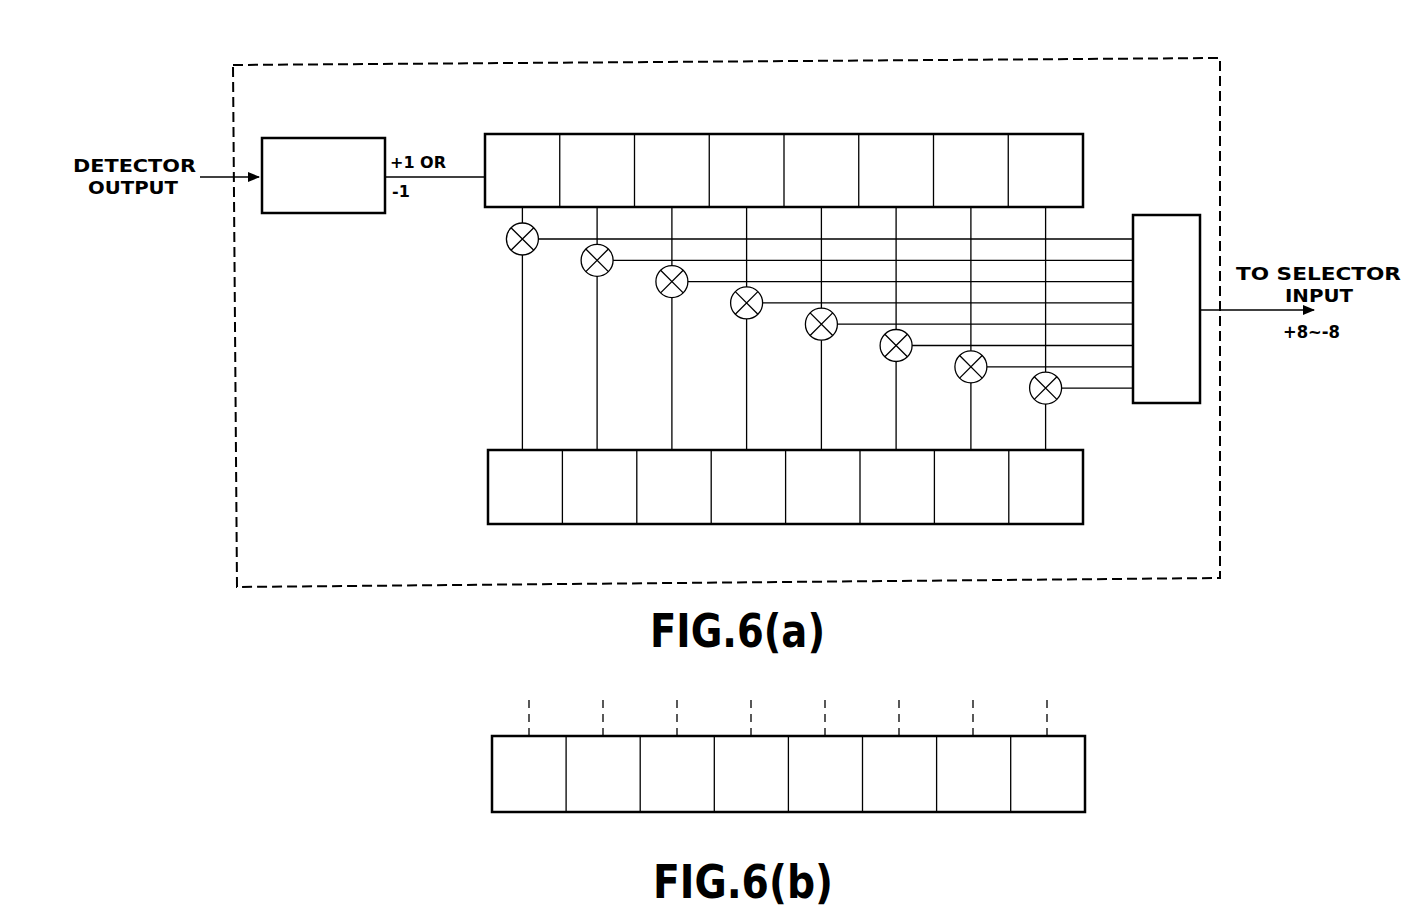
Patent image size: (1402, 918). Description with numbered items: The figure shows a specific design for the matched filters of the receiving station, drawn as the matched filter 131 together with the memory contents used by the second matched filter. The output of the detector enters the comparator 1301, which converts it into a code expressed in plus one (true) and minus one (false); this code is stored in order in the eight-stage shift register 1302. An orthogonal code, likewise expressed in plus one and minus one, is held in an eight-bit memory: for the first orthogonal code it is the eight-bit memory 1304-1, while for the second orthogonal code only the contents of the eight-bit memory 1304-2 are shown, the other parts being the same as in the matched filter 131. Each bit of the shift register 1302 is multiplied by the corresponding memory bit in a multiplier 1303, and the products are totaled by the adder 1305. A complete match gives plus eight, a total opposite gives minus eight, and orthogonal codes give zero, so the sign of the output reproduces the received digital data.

The matched filter 1 131 is at (1052, 58).
The comparator 1301 is at (322, 138).
The 8-stage shift register 1302 is at (990, 134).
The multiplier 1303 is at (507, 243).
The 8-bit memory 1304-1 is at (1033, 525).
The 8-bit memory 1304-2 is at (1038, 813).
The adder 1305 is at (1165, 215).